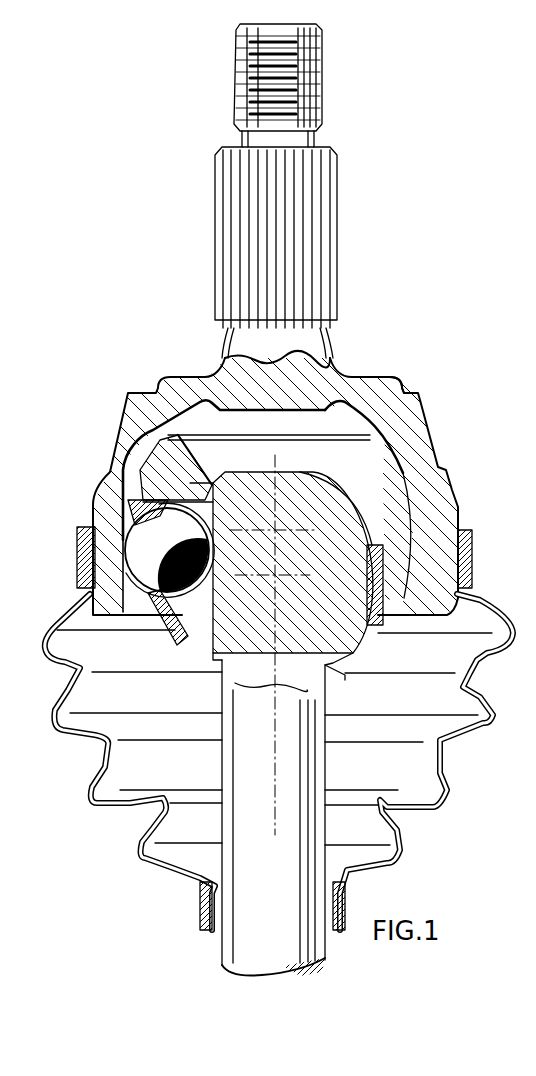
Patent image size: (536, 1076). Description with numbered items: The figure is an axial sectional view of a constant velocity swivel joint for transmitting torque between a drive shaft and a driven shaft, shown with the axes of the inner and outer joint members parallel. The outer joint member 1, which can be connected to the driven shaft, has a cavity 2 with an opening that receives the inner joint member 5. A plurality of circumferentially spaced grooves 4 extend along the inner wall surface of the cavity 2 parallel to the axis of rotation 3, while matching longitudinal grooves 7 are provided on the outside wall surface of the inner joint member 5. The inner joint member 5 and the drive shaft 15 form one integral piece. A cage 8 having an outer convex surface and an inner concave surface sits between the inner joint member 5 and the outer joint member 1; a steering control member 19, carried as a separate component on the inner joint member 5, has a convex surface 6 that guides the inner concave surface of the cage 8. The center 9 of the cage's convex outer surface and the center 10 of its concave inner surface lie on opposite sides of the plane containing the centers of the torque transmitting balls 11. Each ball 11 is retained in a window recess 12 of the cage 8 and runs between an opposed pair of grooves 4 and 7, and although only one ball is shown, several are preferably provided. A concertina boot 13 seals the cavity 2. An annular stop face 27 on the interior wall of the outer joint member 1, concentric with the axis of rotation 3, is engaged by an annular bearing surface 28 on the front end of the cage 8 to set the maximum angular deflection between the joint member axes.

The outer joint member 1 is at (408, 435).
The cavity 2 is at (350, 418).
The axis of rotation 3 is at (273, 750).
The grooves 4 is at (138, 455).
The inner joint member 5 is at (313, 637).
The convex surface 6 is at (410, 588).
The longitudinal grooves 7 is at (205, 500).
The cage 8 is at (382, 475).
The center of the convex outer surface of the cage 9 is at (283, 530).
The center of the concave inner surface of the cage 10 is at (210, 640).
The torque transmitting balls 11 is at (138, 560).
The window recesses 12 is at (130, 522).
The concertina boot 13 is at (447, 750).
The drive shaft 15 is at (293, 810).
The steering control member 19 is at (388, 620).
The annular stop face 27 is at (346, 400).
The annular bearing surface 28 is at (410, 405).